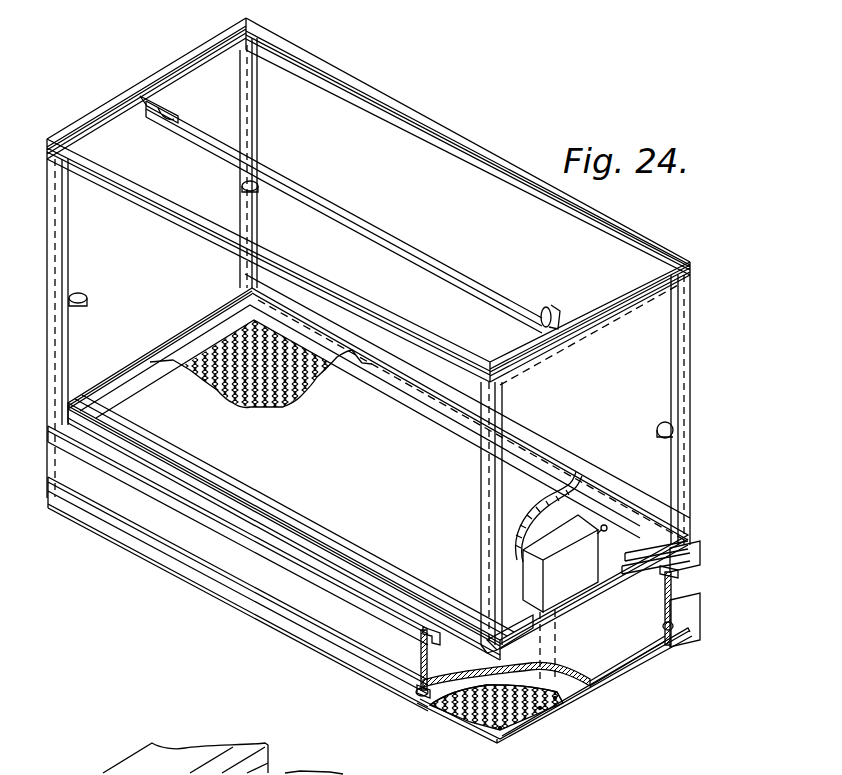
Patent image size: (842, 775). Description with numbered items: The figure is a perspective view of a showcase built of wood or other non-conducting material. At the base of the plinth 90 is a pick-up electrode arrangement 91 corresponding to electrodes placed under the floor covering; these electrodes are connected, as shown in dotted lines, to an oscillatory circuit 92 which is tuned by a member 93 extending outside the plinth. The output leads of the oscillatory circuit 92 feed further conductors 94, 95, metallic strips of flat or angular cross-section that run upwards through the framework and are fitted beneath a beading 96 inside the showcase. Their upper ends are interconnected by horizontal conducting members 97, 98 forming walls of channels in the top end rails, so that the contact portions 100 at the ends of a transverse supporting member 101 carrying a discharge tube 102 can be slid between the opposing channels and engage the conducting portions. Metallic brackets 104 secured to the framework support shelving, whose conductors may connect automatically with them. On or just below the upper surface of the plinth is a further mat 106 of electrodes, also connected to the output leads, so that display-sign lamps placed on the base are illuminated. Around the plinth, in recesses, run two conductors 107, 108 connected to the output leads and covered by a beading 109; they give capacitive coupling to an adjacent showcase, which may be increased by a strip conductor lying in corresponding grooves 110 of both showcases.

The plinth 90 is at (118, 540).
The pick-up electrode arrangement 91 is at (470, 720).
The oscillatory circuit 92 is at (556, 576).
The tuning member 93 is at (603, 528).
The further conductor 94 is at (505, 408).
The further conductor 95 is at (258, 108).
The beading 96 is at (255, 118).
The horizontal conducting member 97 is at (88, 124).
The horizontal conducting member 98 is at (598, 318).
The contact portion 100 is at (172, 124).
The transverse supporting member 101 is at (405, 232).
The discharge tube 102 is at (477, 290).
The metallic bracket 104 is at (243, 186).
The mat 106 is at (215, 388).
The conductor 107 is at (432, 628).
The conductor 108 is at (665, 624).
The beading 109 is at (698, 560).
The groove 110 is at (190, 538).